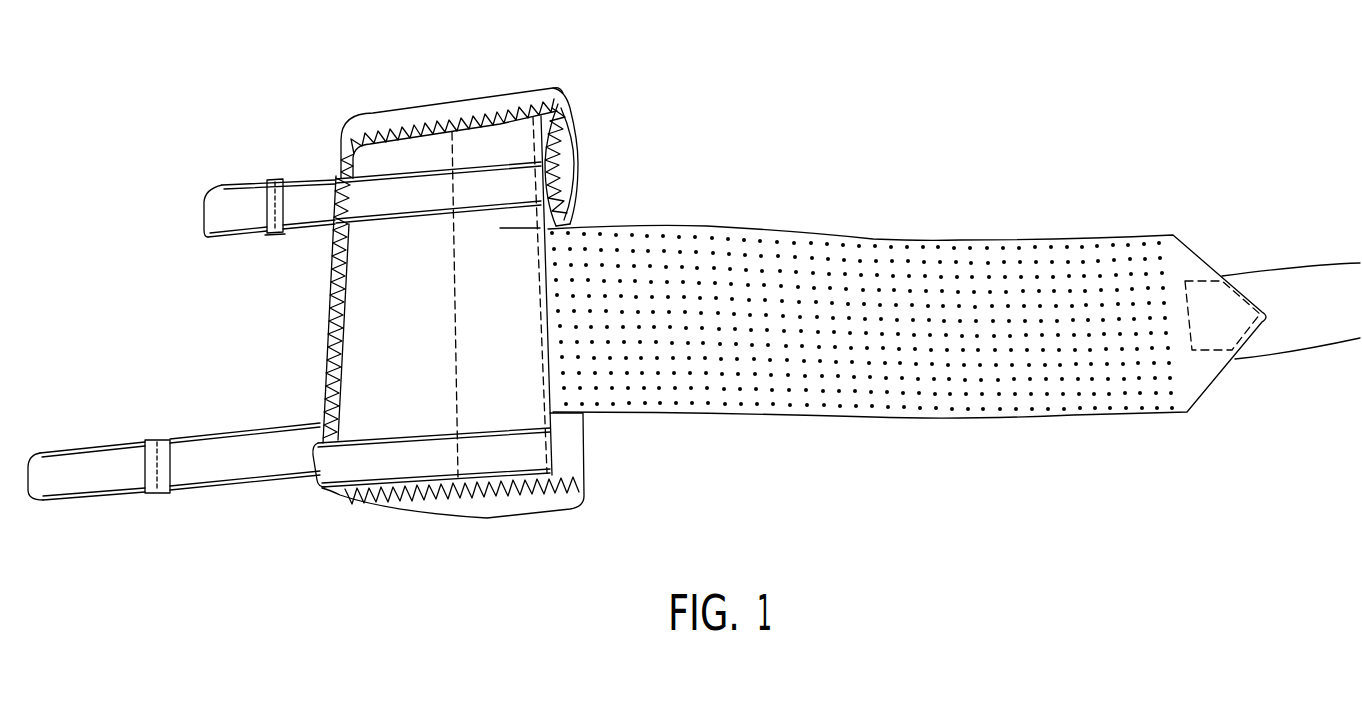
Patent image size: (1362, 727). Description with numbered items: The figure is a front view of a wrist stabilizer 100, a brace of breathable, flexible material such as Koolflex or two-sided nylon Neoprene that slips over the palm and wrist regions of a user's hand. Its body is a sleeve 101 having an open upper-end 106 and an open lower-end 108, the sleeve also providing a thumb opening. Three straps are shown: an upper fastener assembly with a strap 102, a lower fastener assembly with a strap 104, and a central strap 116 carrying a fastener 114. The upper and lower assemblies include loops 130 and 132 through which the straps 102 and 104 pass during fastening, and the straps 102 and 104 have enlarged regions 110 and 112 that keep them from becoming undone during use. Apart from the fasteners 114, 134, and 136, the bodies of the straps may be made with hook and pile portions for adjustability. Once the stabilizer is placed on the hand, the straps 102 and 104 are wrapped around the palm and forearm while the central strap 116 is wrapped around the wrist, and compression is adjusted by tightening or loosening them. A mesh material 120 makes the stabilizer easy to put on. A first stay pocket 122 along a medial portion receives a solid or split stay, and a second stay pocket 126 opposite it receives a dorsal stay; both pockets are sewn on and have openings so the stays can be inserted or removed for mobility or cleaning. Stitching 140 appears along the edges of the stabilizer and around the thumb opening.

The wrist stabilizer 100 is at (834, 71).
The sleeve 101 is at (285, 340).
The strap 102 is at (226, 184).
The strap 104 is at (213, 490).
The open upper-end 106 is at (497, 100).
The open lower-end 108 is at (492, 520).
The enlarged region 110 is at (274, 235).
The enlarged region 112 is at (163, 440).
The fastener 114 is at (1277, 268).
The central strap 116 is at (972, 238).
The mesh material 120 is at (547, 119).
The first stay pocket 122 is at (507, 230).
The second stay pocket 126 is at (312, 377).
The loop 130 is at (336, 178).
The loop 132 is at (317, 491).
The fastener 134 is at (266, 180).
The fastener 136 is at (85, 504).
The stitching 140 is at (577, 223).